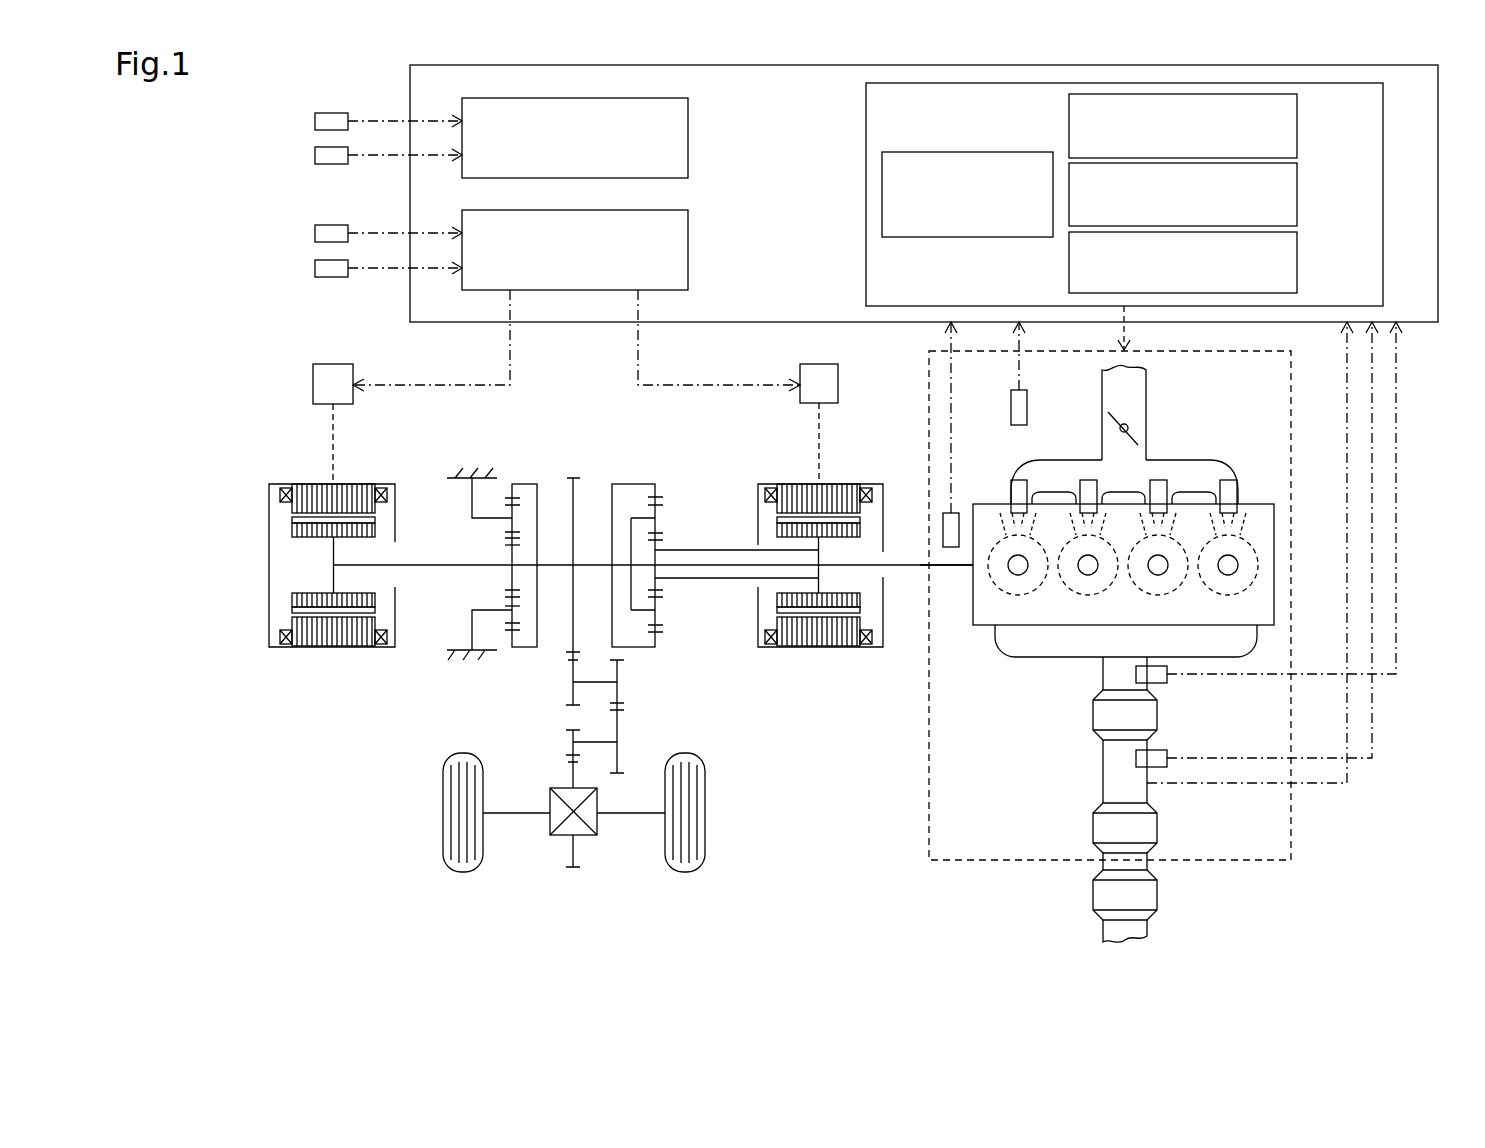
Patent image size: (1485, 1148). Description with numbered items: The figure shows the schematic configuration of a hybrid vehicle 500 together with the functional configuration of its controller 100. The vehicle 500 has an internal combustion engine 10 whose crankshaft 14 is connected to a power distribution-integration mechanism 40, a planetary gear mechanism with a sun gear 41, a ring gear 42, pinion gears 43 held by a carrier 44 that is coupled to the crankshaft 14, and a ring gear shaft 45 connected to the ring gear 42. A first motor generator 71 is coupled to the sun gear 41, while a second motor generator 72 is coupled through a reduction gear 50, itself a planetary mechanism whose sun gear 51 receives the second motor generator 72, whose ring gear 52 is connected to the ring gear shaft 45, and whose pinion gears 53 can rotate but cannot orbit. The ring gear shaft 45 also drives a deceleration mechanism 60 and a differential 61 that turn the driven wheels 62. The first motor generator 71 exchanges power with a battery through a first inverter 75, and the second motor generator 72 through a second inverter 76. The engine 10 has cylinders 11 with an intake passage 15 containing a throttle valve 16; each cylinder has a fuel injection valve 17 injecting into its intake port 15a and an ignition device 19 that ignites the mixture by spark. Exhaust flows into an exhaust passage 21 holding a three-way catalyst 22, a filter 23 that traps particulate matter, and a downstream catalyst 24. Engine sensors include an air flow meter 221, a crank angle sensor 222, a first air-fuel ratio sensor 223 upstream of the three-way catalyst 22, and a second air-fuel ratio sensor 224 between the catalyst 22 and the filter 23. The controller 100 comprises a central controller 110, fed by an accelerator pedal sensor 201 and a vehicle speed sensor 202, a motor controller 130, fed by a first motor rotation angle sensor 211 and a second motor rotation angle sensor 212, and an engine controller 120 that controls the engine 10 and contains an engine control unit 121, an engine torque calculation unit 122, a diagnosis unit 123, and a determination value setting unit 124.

The controller 100 is at (410, 72).
The central controller 110 is at (620, 98).
The motor controller 130 is at (620, 210).
The engine controller 120 is at (866, 92).
The engine control unit 121 is at (985, 152).
The engine torque calculation unit 122 is at (1299, 126).
The diagnosis unit 123 is at (1299, 193).
The determination value setting unit 124 is at (1299, 261).
The accelerator pedal sensor 201 is at (315, 121).
The vehicle speed sensor 202 is at (315, 155).
The first motor rotation angle sensor 211 is at (315, 233).
The second motor rotation angle sensor 212 is at (315, 268).
The second inverter 76 is at (313, 389).
The first inverter 75 is at (800, 395).
The second motor generator 72 is at (269, 578).
The first motor generator 71 is at (870, 484).
The reduction gear 50 is at (462, 564).
The sun gear 51 is at (505, 550).
The ring gear 52 is at (508, 492).
The pinion gears 53 is at (502, 627).
The power distribution-integration mechanism 40 is at (715, 526).
The sun gear 41 is at (658, 545).
The ring gear 42 is at (658, 497).
The pinion gears 43 is at (658, 602).
The carrier 44 is at (615, 716).
The ring gear shaft 45 is at (573, 565).
The deceleration mechanism 60 is at (648, 724).
The differential 61 is at (558, 838).
The driven wheels 62 is at (443, 775).
The internal combustion engine 10 is at (948, 862).
The crankshaft 14 is at (955, 570).
The intake passage 15 is at (1102, 399).
The intake port 15a is at (1058, 498).
The throttle valve 16 is at (1135, 432).
The fuel injection valve 17 is at (1088, 480).
The ignition device 19 is at (1026, 573).
The cylinders 11 is at (1022, 596).
The exhaust passage 21 is at (1103, 768).
The three-way catalyst 22 is at (1093, 712).
The filter 23 is at (1093, 822).
The downstream catalyst 24 is at (1093, 894).
The air flow meter 221 is at (1011, 406).
The crank angle sensor 222 is at (954, 513).
The first air-fuel ratio sensor 223 is at (1156, 684).
The second air-fuel ratio sensor 224 is at (1158, 750).
The hybrid vehicle 500 is at (1391, 899).